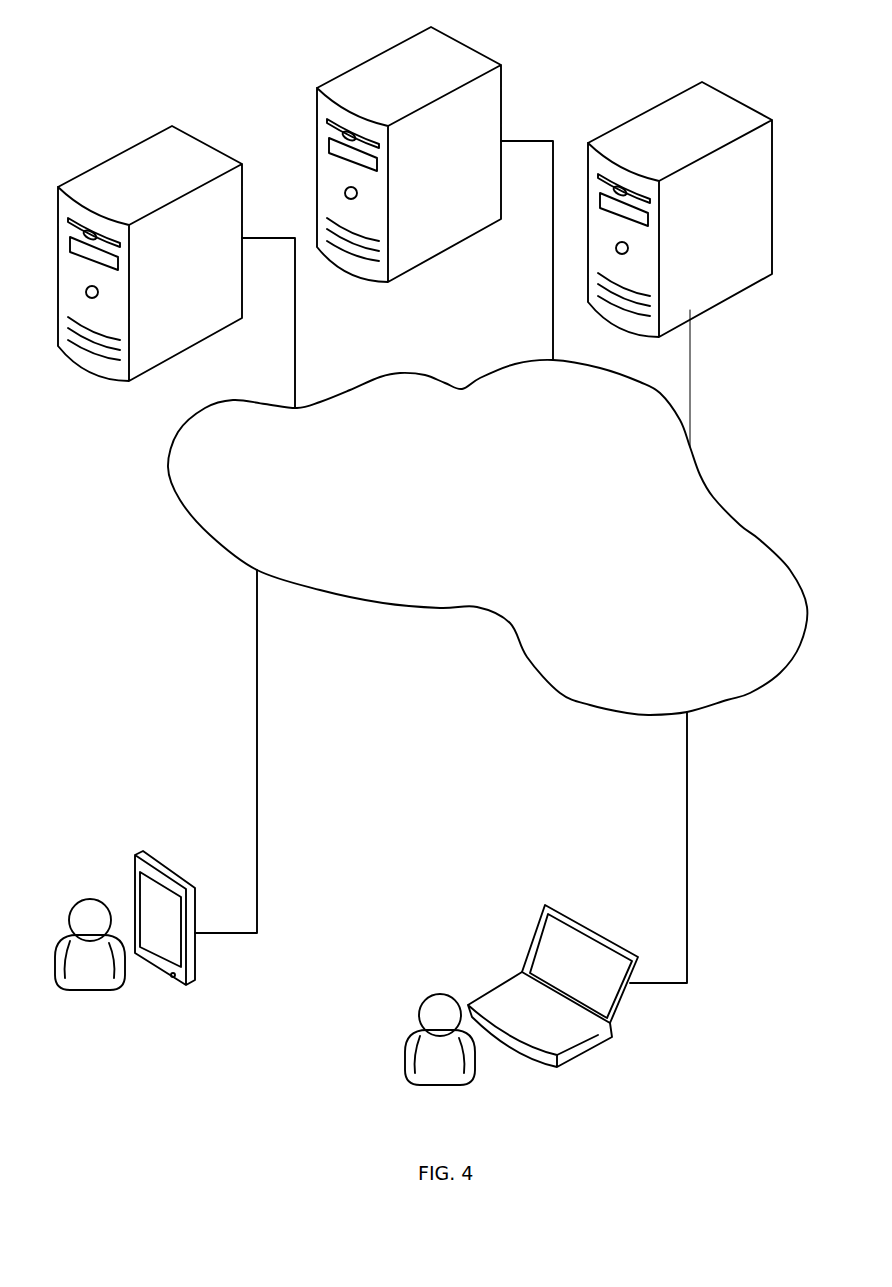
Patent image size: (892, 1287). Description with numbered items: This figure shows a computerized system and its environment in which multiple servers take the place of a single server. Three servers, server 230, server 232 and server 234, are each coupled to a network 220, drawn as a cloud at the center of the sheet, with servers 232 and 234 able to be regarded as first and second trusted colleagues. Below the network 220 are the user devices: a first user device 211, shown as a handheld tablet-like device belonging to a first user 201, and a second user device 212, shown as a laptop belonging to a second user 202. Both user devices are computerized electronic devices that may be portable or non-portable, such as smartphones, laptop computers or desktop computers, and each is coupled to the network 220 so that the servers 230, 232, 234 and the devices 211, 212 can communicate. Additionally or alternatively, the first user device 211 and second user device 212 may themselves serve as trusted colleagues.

The first user 201 is at (90, 944).
The second user 202 is at (440, 1039).
The first user device 211 is at (165, 918).
The second user device 212 is at (553, 986).
The network 220 is at (487, 537).
The server 230 is at (409, 154).
The server 232 is at (150, 253).
The server 234 is at (680, 209).